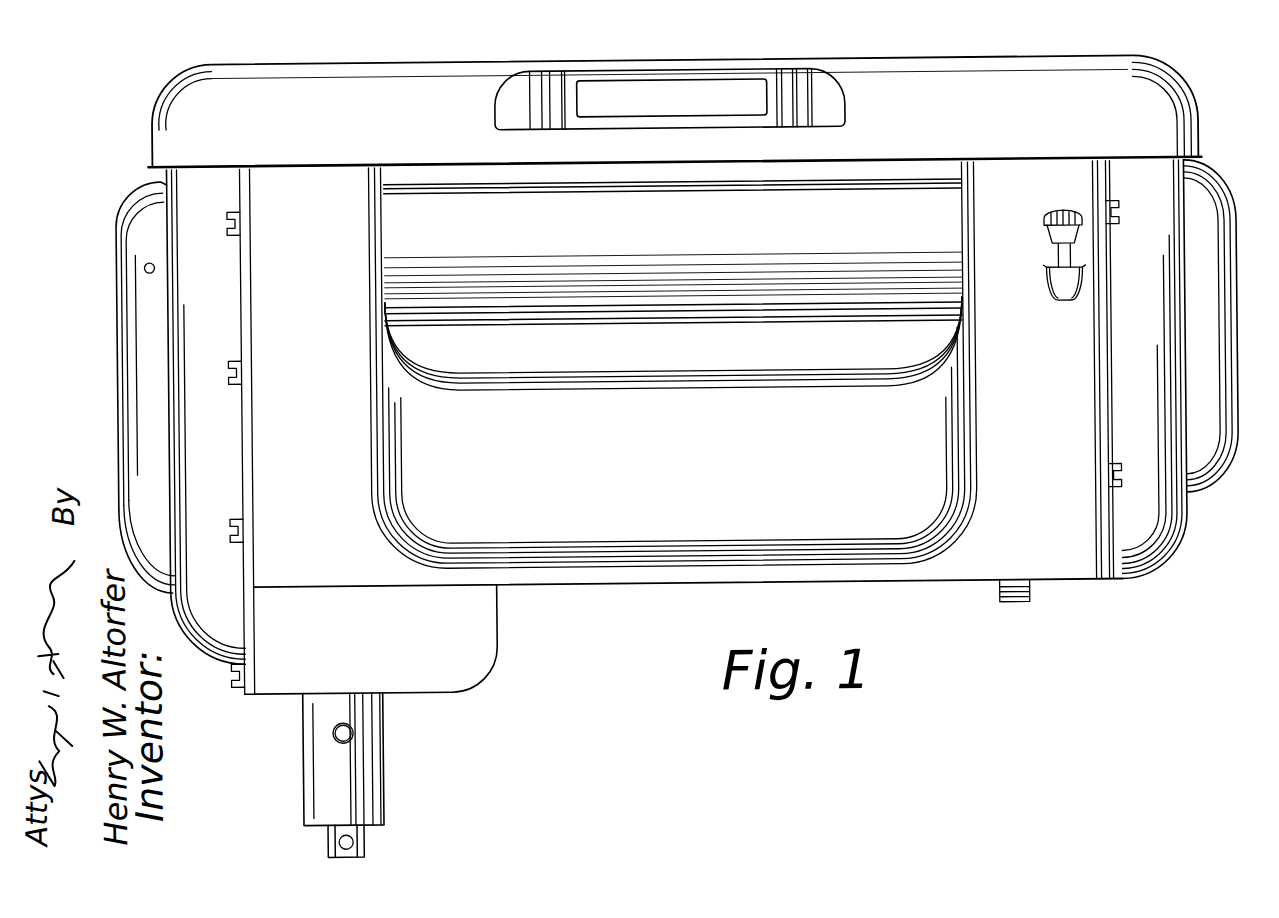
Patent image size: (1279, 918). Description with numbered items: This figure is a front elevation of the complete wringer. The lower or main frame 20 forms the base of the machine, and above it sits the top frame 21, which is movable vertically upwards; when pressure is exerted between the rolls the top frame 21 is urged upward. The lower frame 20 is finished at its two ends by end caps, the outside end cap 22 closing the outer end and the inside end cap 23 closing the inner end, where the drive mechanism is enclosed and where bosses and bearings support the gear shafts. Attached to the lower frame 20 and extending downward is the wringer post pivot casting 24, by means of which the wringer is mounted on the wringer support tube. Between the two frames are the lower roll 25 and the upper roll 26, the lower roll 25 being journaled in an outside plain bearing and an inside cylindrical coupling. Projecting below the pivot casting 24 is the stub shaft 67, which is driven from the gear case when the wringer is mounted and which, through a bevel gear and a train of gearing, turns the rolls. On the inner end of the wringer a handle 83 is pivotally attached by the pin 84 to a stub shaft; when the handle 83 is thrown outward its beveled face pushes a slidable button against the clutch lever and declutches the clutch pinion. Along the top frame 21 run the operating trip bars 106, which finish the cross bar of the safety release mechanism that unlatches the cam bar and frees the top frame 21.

The lower or main frame 20 is at (945, 580).
The top frame 21 is at (1155, 103).
The outside end cap 22 is at (1225, 353).
The inside end cap 23 is at (217, 612).
The wringer post pivot casting 24 is at (366, 749).
The lower roll 25 is at (670, 363).
The upper roll 26 is at (676, 238).
The stub shaft 67 is at (355, 835).
The handle 83 is at (135, 324).
The pin 84 is at (145, 263).
The operating trip bars 106 is at (680, 98).